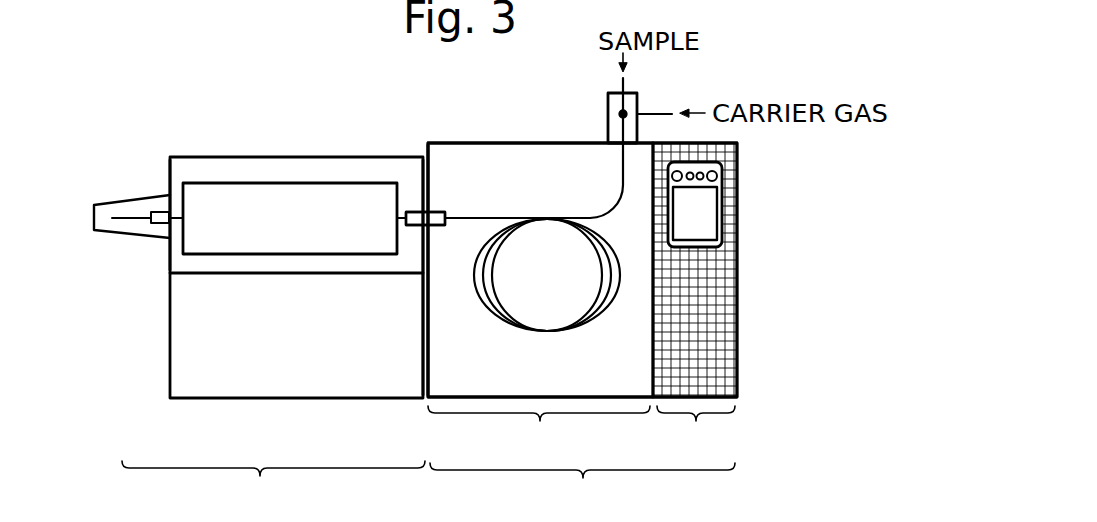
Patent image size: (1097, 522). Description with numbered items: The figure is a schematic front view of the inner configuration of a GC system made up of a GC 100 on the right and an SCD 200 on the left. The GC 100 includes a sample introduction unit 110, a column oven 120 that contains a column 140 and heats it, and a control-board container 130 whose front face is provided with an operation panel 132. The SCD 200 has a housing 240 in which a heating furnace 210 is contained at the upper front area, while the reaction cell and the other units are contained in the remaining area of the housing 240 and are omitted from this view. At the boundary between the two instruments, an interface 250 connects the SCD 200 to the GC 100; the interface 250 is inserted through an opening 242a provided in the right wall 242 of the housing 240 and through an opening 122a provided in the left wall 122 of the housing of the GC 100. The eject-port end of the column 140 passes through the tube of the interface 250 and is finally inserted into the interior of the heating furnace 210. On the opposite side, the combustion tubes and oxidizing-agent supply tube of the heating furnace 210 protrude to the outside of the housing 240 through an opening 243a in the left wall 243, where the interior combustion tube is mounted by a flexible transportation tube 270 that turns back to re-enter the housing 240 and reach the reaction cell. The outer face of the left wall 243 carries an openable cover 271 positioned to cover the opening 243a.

The GC 100 is at (582, 325).
The sample introduction unit 110 is at (608, 105).
The column oven 120 is at (540, 299).
The left wall 122 is at (430, 154).
The opening 122a is at (433, 208).
The control-board container 130 is at (695, 299).
The operation panel 132 is at (723, 205).
The column 140 is at (503, 323).
The SCD 200 is at (273, 484).
The heating furnace 210 is at (231, 182).
The housing 240 is at (300, 156).
The right wall 242 is at (418, 368).
The opening 242a is at (418, 208).
The left wall 243 is at (168, 177).
The opening 243a is at (163, 205).
The interface 250 is at (413, 227).
The transportation tube 270 is at (125, 222).
The cover 271 is at (95, 213).